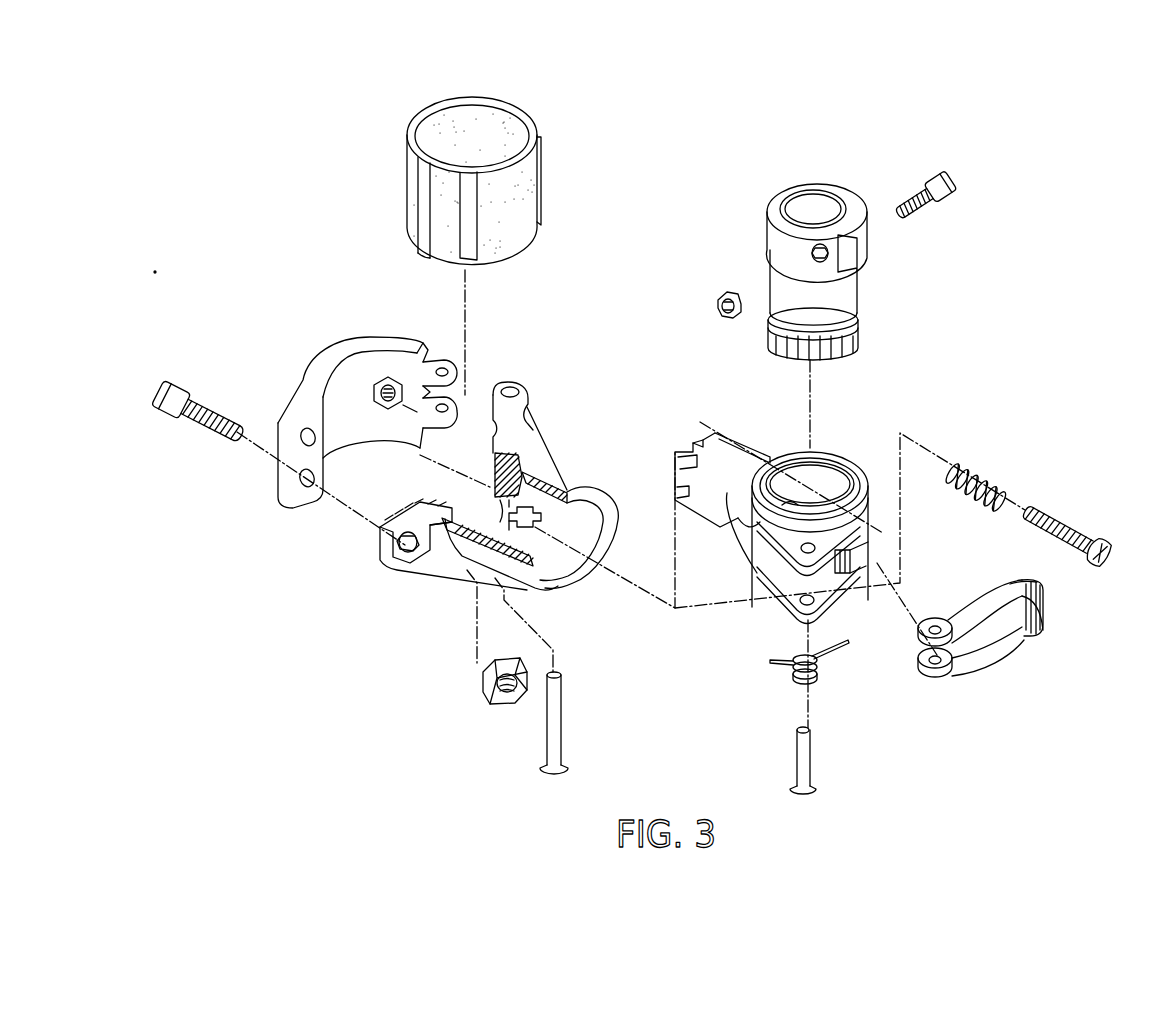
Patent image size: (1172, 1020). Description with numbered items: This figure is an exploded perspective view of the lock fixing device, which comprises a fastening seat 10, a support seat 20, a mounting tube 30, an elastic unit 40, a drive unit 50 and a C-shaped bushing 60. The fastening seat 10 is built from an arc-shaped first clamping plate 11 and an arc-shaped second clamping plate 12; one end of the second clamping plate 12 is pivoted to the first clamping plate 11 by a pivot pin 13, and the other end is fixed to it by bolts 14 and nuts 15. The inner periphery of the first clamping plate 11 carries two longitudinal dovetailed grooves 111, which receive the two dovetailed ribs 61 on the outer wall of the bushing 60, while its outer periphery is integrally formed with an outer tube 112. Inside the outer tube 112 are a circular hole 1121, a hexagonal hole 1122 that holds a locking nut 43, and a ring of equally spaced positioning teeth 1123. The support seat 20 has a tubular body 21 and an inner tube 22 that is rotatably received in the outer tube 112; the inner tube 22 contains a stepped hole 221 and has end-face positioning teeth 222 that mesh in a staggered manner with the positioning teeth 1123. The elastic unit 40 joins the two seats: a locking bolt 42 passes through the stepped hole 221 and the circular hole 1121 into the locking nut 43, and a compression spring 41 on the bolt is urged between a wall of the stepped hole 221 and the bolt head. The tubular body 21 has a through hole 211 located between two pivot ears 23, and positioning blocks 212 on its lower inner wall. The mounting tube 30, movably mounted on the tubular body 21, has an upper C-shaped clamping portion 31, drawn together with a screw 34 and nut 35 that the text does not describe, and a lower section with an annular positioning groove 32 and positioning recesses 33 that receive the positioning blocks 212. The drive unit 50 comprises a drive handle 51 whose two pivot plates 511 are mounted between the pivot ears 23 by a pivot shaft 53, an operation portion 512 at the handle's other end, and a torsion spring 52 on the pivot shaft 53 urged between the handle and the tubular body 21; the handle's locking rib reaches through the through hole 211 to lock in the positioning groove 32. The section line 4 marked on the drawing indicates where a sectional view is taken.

The section line 4- 4 is at (700, 420).
The fastening seat 10 is at (516, 466).
The first clamping plate 11 is at (522, 410).
The second clamping plate 12 is at (343, 346).
The pivot pin 13 is at (553, 727).
The bolts 14 is at (197, 428).
The nuts 15 is at (482, 687).
The support seat 20 is at (808, 516).
The tubular body 21 is at (845, 462).
The inner tube 22 is at (718, 520).
The pivot ears 23 is at (778, 596).
The mounting tube 30 is at (878, 258).
The C-shaped clamping portion 31 is at (857, 207).
The annular positioning groove 32 is at (858, 314).
The positioning recesses 33 is at (795, 350).
The clamp screw 34 is at (932, 213).
The clamp nut 35 is at (730, 292).
The elastic unit 40 is at (1029, 460).
The compression spring 41 is at (978, 465).
The locking bolt 42 is at (1068, 520).
The locking nut 43 is at (387, 377).
The drive unit 50 is at (997, 683).
The drive handle 51 is at (992, 652).
The torsion spring 52 is at (795, 675).
The pivot shaft 53 is at (805, 763).
The C-shaped bushing 60 is at (530, 108).
The dovetailed ribs 61 is at (541, 175).
The dovetailed grooves 111 is at (450, 505).
The outer tube 112 is at (595, 490).
The through hole 211 is at (845, 572).
The positioning blocks 212 is at (850, 557).
The stepped hole 221 is at (783, 520).
The positioning teeth 222 is at (698, 438).
The pivot plates 511 is at (930, 676).
The operation portion 512 is at (1043, 603).
The circular hole 1121 is at (567, 547).
The hexagonal hole 1122 is at (495, 498).
The positioning teeth 1123 is at (541, 517).